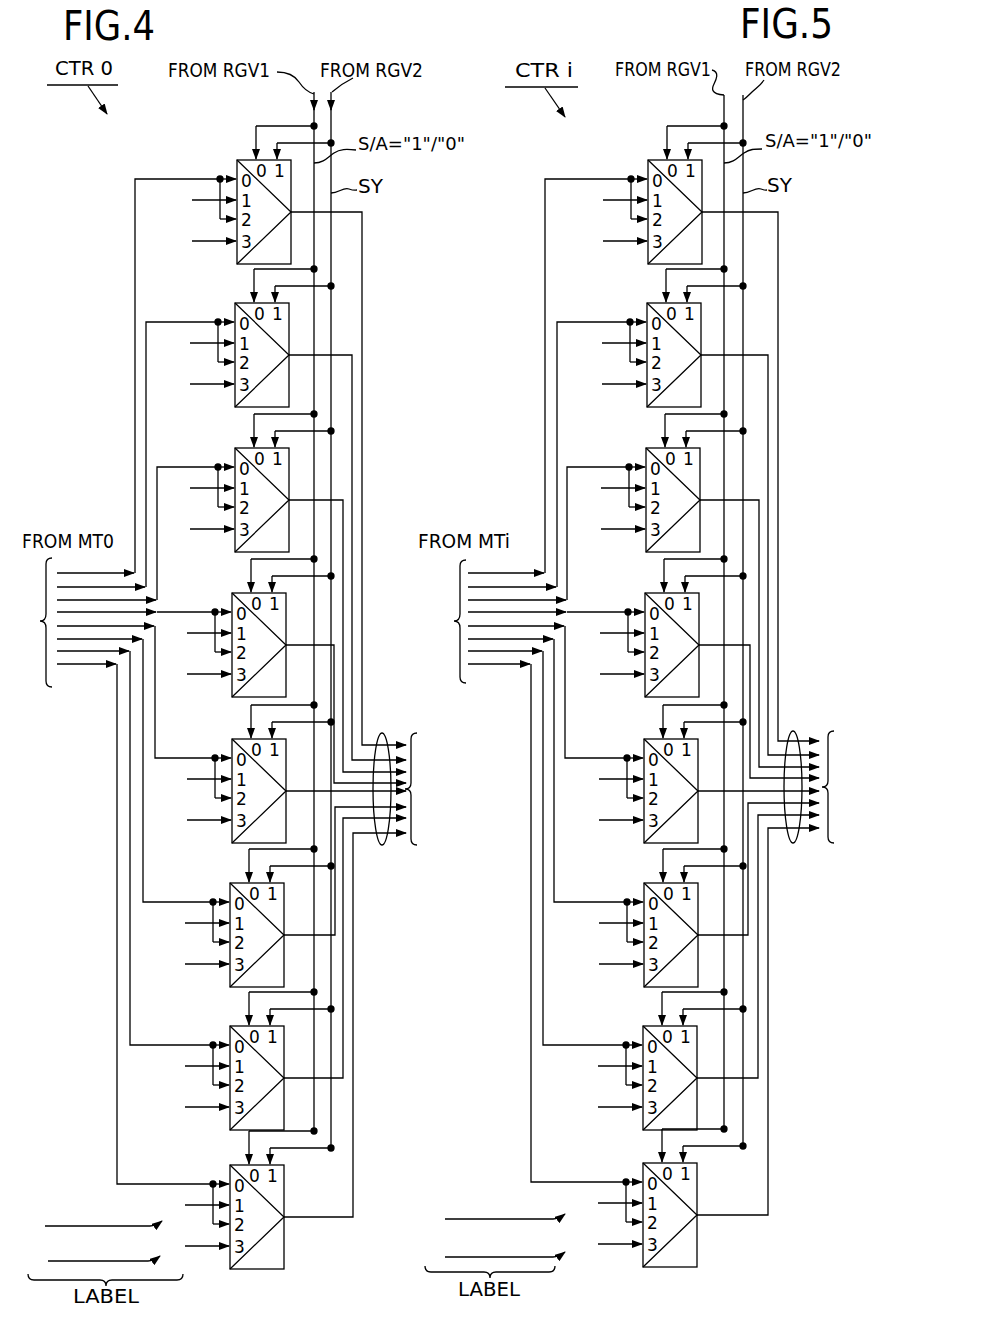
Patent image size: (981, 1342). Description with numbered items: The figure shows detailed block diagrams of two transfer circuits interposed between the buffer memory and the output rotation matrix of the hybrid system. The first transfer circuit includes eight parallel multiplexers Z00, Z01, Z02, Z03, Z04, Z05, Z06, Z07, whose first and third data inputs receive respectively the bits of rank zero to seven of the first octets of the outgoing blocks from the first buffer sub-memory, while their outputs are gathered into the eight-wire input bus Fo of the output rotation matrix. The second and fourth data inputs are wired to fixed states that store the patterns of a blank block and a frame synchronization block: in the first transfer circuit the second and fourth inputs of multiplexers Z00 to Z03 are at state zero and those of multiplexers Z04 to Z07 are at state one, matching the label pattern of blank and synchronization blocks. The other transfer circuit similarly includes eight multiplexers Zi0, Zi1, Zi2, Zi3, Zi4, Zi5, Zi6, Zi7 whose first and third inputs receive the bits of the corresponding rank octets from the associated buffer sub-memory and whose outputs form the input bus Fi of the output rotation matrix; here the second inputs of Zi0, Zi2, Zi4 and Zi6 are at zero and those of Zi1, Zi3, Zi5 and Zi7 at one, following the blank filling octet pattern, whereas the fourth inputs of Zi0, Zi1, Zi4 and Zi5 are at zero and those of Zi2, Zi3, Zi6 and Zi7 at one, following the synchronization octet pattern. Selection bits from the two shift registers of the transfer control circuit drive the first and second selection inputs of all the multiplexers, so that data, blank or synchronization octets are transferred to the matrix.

In FIG. 4, the multiplexer Z00 is at (237, 160).
In FIG. 4, the multiplexer Z01 is at (235, 303).
In FIG. 4, the multiplexer Z02 is at (235, 448).
In FIG. 4, the multiplexer Z03 is at (232, 593).
In FIG. 4, the multiplexer Z04 is at (232, 739).
In FIG. 4, the multiplexer Z05 is at (230, 883).
In FIG. 4, the multiplexer Z06 is at (230, 1026).
In FIG. 4, the multiplexer Z07 is at (230, 1165).
In FIG. 5, the multiplexer Zi0 is at (648, 160).
In FIG. 5, the multiplexer Zi1 is at (647, 303).
In FIG. 5, the multiplexer Zi2 is at (646, 448).
In FIG. 5, the multiplexer Zi3 is at (645, 593).
In FIG. 5, the multiplexer Zi4 is at (644, 739).
In FIG. 5, the multiplexer Zi5 is at (644, 883).
In FIG. 5, the multiplexer Zi6 is at (643, 1026).
In FIG. 5, the multiplexer Zi7 is at (643, 1163).
In FIG. 4, the input bus of output rotation matrix Fo is at (382, 733).
In FIG. 5, the input bus of output rotation matrix Fi is at (793, 732).